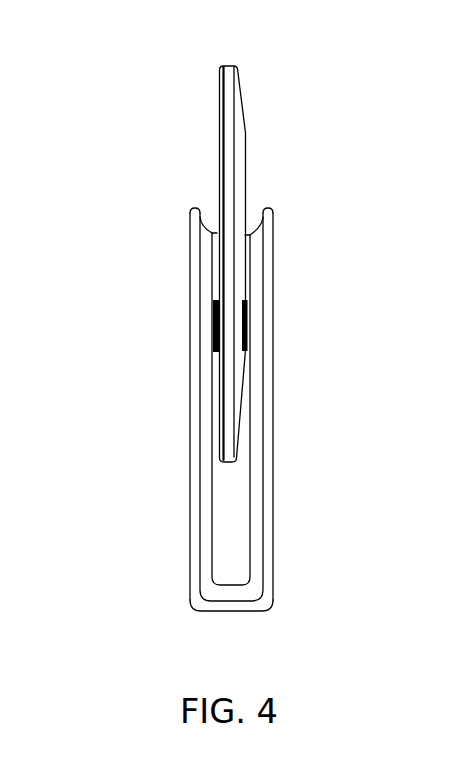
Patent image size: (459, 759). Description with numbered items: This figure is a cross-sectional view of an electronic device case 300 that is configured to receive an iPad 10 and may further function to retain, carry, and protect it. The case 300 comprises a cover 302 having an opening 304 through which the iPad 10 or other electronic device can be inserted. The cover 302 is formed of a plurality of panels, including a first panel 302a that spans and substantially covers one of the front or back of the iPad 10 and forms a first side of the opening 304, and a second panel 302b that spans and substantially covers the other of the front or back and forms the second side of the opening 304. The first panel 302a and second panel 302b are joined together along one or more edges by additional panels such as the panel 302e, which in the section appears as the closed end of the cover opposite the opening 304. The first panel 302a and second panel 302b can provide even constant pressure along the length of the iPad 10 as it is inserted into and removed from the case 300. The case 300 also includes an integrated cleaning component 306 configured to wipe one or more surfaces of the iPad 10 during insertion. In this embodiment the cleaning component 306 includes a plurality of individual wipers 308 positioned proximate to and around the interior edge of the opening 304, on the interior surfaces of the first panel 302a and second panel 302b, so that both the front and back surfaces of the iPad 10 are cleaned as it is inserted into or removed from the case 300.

The electronic device case 300 is at (143, 78).
The iPad 10 is at (243, 128).
The cover 302 is at (188, 488).
The first panel 302a is at (273, 467).
The second panel 302b is at (190, 436).
The panel 302e is at (243, 606).
The opening 304 is at (250, 213).
The integrated cleaning component 306 is at (247, 355).
The wipers 308 is at (250, 328).